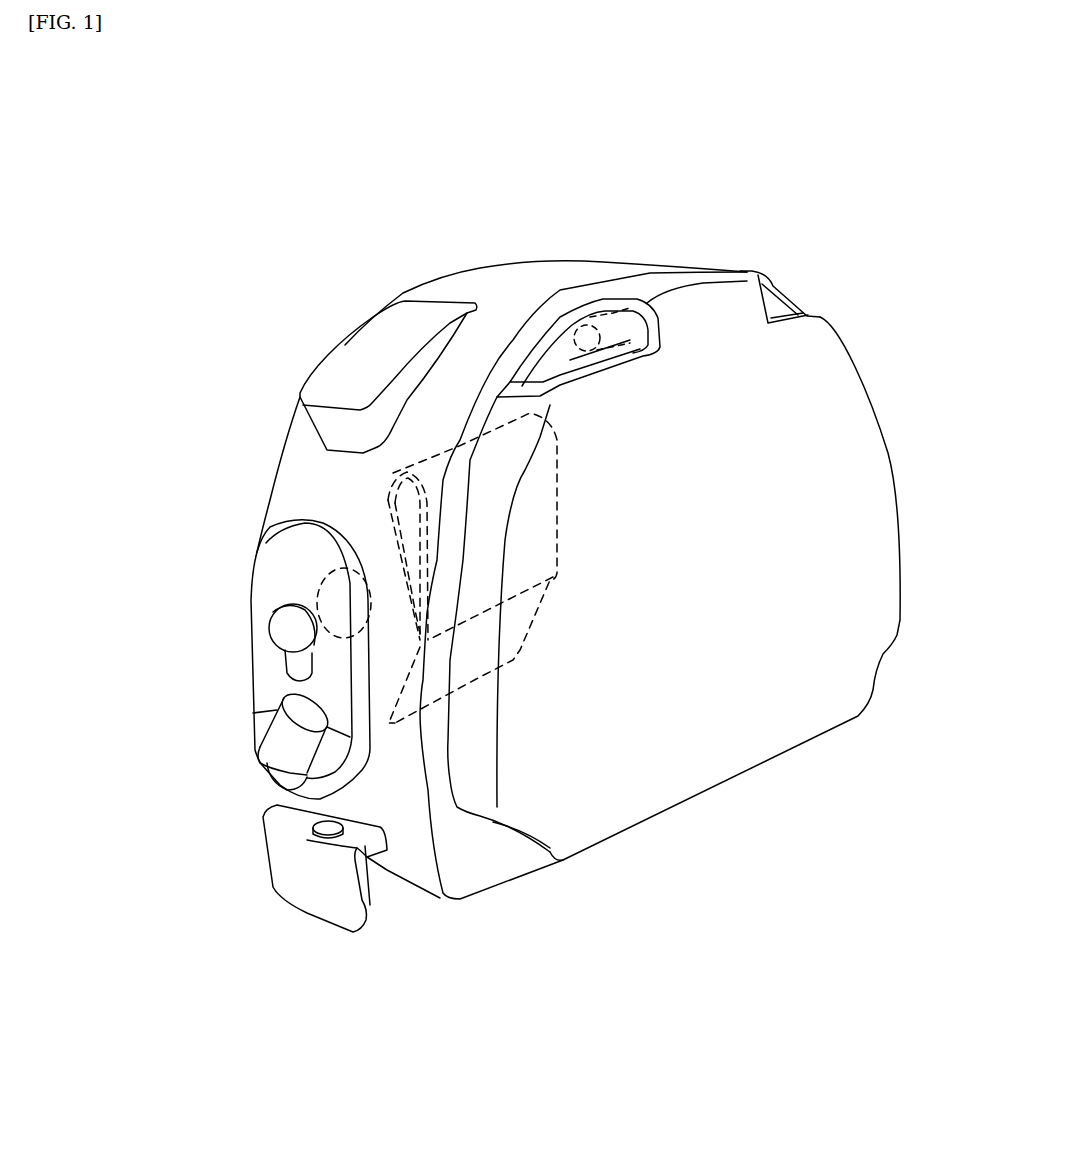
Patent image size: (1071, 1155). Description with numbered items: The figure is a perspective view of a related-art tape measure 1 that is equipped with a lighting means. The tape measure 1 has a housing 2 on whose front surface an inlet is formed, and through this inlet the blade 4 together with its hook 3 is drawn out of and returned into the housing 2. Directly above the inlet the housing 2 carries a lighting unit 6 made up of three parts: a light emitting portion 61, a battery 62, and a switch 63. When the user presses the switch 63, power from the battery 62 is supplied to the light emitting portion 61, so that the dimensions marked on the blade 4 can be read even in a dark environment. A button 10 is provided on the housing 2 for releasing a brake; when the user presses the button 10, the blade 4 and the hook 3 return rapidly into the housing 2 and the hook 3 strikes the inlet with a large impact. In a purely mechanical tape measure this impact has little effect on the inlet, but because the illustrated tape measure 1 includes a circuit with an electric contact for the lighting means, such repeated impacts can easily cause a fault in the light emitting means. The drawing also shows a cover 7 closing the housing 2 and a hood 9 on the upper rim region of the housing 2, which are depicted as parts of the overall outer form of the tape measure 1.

The tape measure 1 is at (773, 218).
The housing 2 is at (490, 290).
The hook 3 is at (320, 887).
The tape blade 4 is at (408, 505).
The locking unit 6 is at (95, 748).
The cover 7 is at (838, 448).
The hood 9 is at (577, 327).
The button 10 is at (368, 367).
The light emitting portion 61 is at (283, 781).
The battery 62 is at (337, 588).
The switch 63 is at (297, 635).